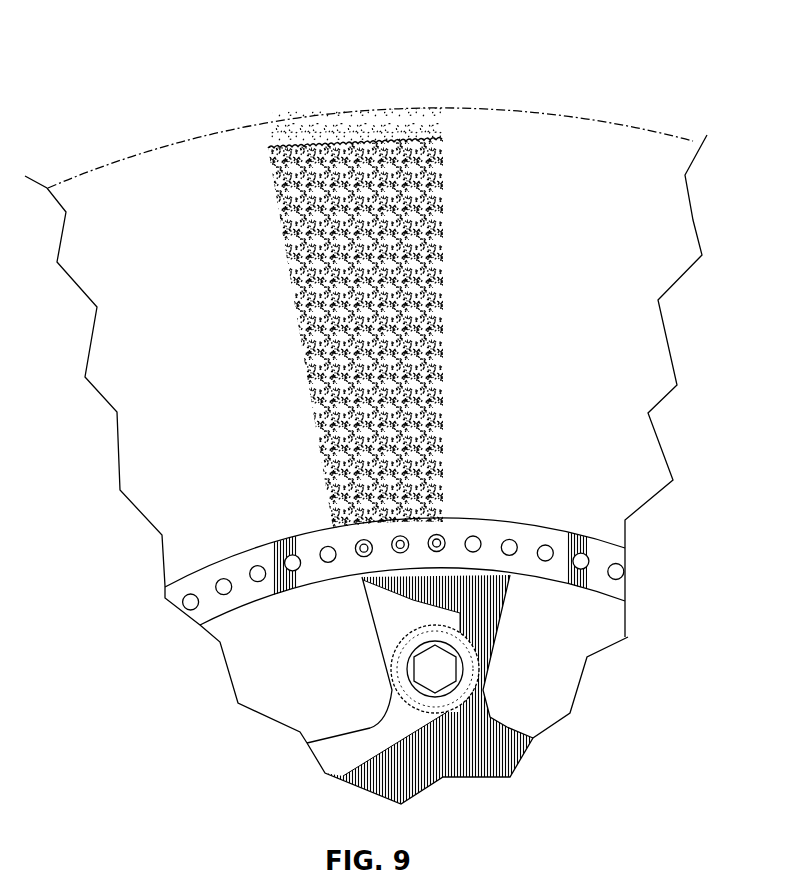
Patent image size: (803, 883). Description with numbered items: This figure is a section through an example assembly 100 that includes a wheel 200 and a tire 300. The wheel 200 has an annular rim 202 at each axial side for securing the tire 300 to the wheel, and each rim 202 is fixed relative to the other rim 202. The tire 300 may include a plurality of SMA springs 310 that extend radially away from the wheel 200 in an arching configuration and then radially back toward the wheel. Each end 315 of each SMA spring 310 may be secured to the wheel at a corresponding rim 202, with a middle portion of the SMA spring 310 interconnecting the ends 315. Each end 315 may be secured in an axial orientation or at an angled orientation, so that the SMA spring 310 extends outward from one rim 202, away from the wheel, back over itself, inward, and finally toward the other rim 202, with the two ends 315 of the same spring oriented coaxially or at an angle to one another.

The assembly 100 is at (111, 92).
The wheel 200 is at (260, 546).
The annular rim 202 is at (588, 583).
The tire 300 is at (445, 109).
The SMA spring 310 is at (270, 173).
The end of SMA spring 315 is at (446, 551).